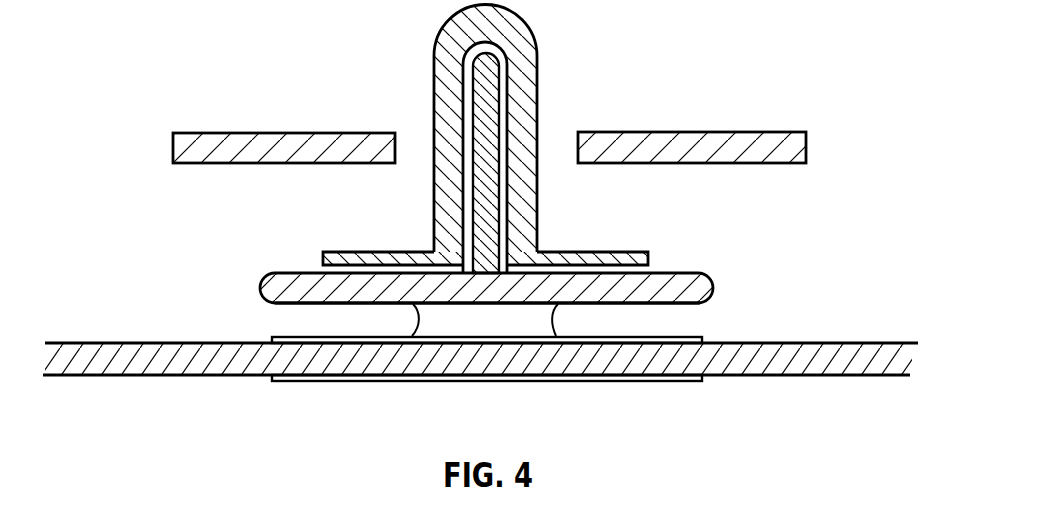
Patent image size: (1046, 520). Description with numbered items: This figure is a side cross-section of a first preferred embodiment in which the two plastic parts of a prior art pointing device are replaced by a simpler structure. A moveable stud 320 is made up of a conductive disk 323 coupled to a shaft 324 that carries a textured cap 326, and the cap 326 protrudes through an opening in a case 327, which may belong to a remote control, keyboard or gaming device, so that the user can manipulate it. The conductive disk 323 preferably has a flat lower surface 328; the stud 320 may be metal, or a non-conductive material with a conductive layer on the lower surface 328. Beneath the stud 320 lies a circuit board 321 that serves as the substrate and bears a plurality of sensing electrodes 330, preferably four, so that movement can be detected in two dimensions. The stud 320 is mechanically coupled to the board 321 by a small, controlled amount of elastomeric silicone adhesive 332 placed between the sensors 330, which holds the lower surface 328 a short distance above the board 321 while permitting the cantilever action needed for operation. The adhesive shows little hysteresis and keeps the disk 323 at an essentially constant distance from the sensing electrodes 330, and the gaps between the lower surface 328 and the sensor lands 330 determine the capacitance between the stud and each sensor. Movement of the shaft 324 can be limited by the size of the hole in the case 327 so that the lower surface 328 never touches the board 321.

The stud 320 is at (295, 267).
The circuit board 321 is at (742, 378).
The conductive disk 323 is at (708, 276).
The shaft 324 is at (497, 227).
The cap 326 is at (536, 50).
The case 327 is at (621, 132).
The lower surface 328 is at (287, 305).
The sensing electrodes 330 is at (324, 344).
The solder joint 332 is at (556, 318).